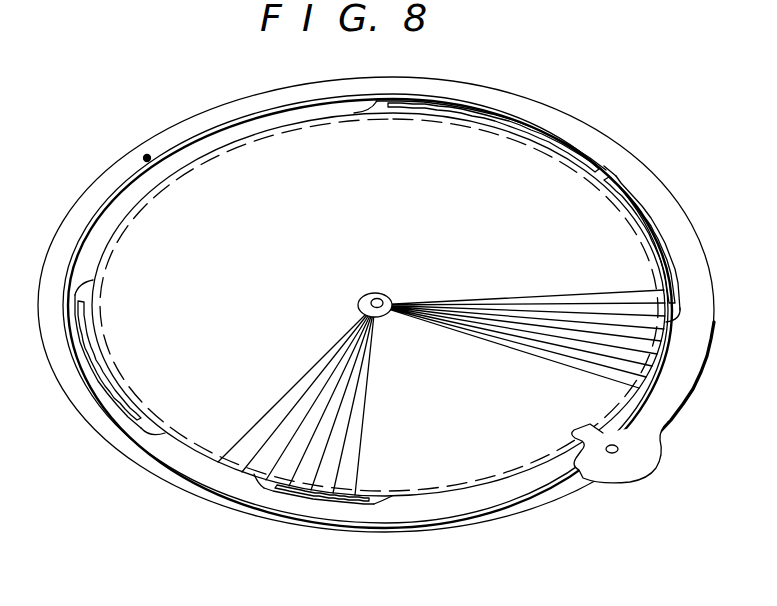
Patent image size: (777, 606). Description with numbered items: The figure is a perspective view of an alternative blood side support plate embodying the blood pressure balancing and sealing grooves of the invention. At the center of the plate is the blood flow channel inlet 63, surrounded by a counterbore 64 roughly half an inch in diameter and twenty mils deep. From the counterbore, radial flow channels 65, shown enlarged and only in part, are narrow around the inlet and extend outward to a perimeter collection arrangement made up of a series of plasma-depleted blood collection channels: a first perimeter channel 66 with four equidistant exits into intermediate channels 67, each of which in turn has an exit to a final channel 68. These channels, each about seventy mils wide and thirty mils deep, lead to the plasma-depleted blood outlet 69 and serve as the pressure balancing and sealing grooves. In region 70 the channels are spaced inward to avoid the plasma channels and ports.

The blood flow channel inlet 63 is at (386, 301).
The counterbore 64 is at (373, 293).
The radial flow channels 65 is at (290, 400).
The first perimeter channel 66 is at (664, 353).
The intermediate channels 67 is at (637, 197).
The final channel 68 is at (192, 137).
The plasma-depleted blood outlet 69 is at (147, 158).
The region 70 is at (582, 461).